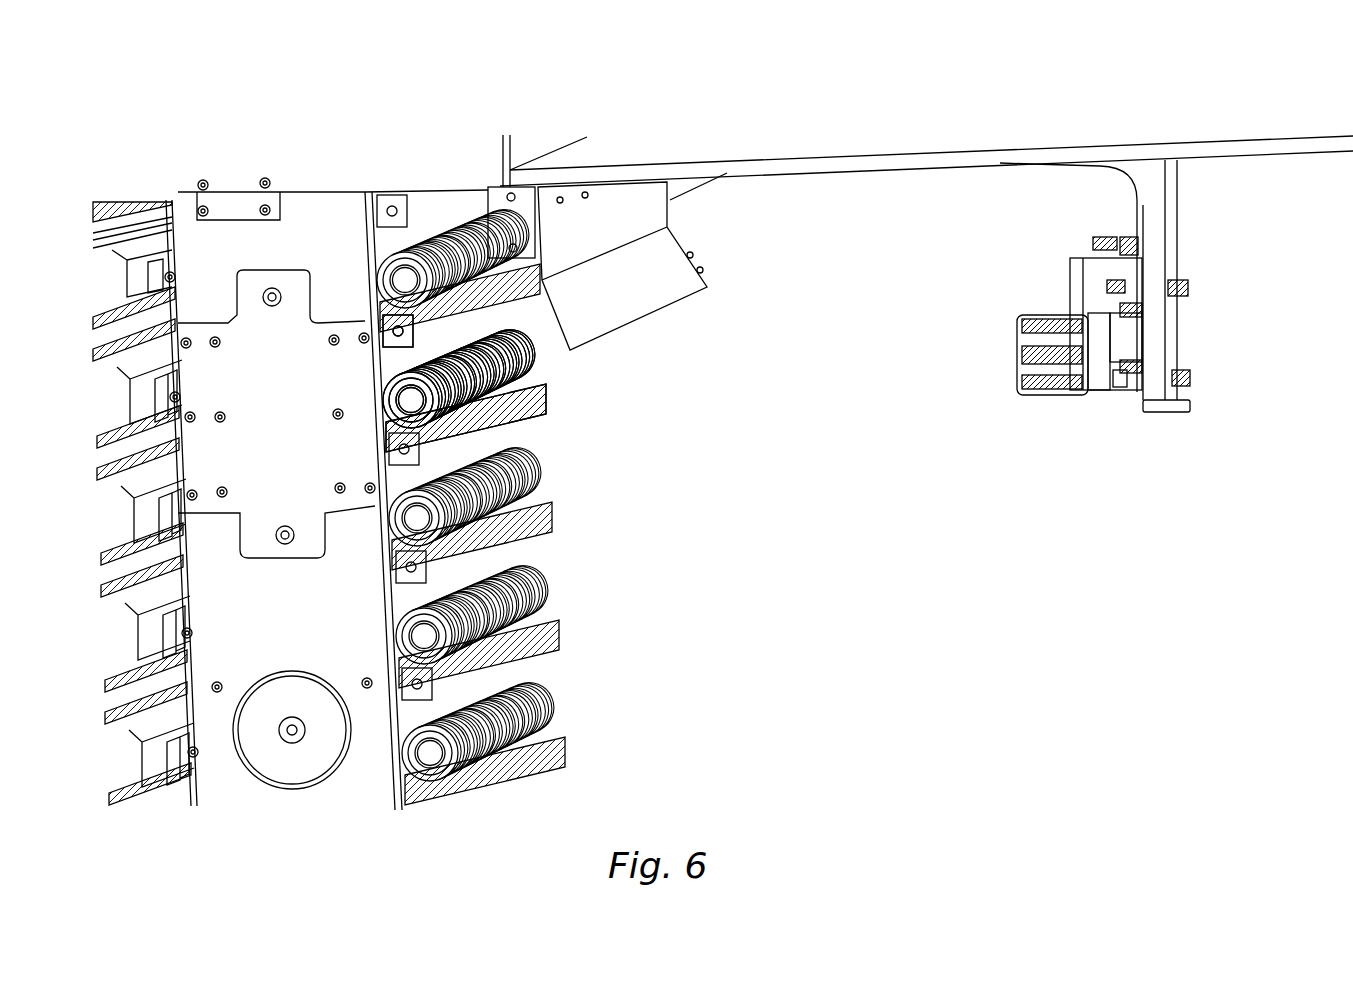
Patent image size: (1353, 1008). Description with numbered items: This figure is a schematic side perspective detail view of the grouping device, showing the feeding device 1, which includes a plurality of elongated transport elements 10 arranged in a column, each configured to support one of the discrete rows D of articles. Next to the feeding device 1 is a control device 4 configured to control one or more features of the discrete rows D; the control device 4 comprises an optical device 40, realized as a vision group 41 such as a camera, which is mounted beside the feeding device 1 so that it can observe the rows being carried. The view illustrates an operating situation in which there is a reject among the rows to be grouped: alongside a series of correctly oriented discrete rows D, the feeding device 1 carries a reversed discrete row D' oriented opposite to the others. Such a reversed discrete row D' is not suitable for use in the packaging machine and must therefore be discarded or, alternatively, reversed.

The feeding device 1 is at (342, 137).
The elongated transport elements 10 is at (378, 538).
The discrete rows D is at (615, 619).
The reversed discrete row D' is at (564, 385).
The control device 4 is at (1119, 435).
The optical device 40 is at (1082, 412).
The vision group 41 is at (1020, 327).